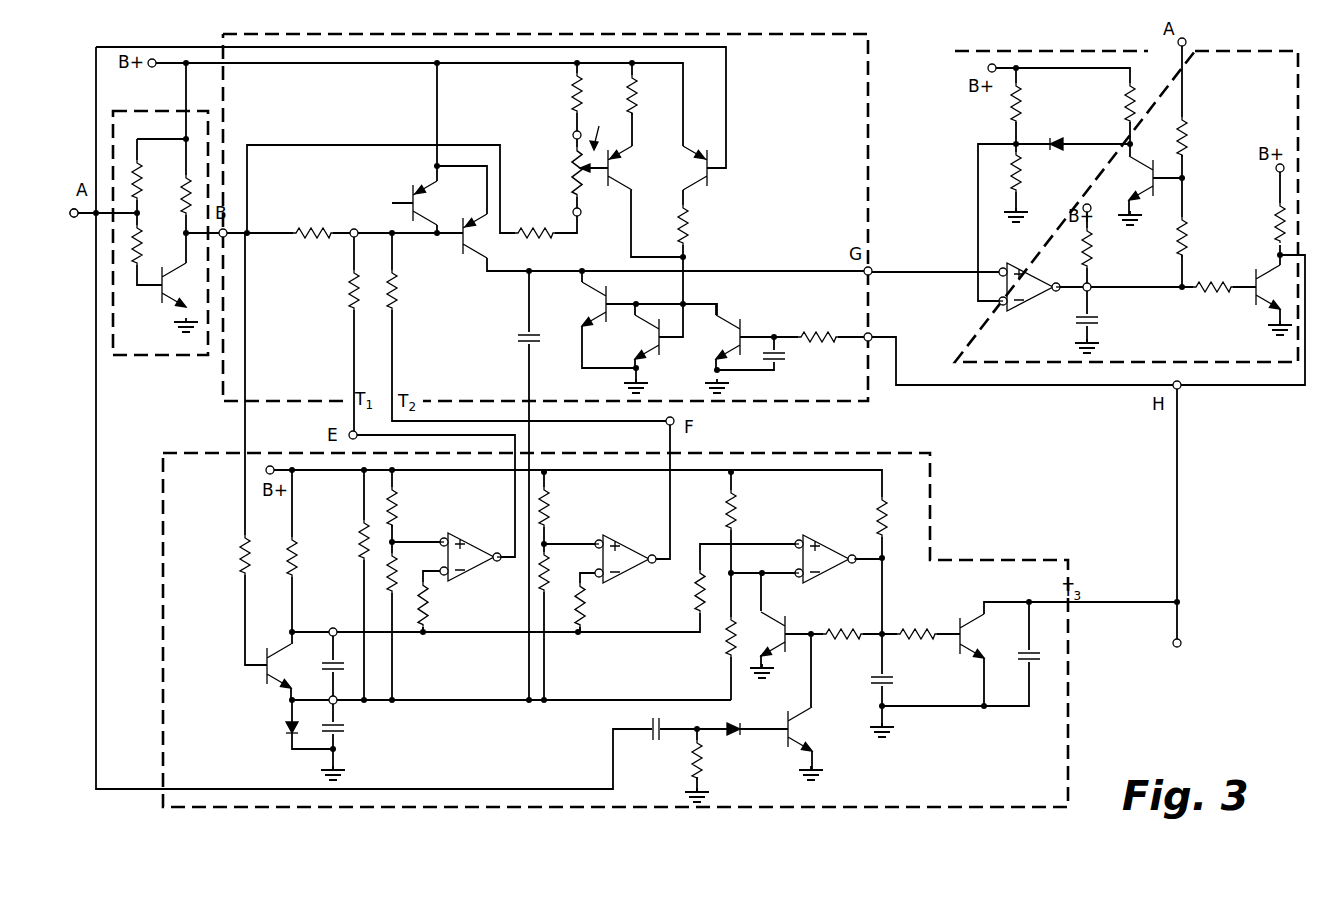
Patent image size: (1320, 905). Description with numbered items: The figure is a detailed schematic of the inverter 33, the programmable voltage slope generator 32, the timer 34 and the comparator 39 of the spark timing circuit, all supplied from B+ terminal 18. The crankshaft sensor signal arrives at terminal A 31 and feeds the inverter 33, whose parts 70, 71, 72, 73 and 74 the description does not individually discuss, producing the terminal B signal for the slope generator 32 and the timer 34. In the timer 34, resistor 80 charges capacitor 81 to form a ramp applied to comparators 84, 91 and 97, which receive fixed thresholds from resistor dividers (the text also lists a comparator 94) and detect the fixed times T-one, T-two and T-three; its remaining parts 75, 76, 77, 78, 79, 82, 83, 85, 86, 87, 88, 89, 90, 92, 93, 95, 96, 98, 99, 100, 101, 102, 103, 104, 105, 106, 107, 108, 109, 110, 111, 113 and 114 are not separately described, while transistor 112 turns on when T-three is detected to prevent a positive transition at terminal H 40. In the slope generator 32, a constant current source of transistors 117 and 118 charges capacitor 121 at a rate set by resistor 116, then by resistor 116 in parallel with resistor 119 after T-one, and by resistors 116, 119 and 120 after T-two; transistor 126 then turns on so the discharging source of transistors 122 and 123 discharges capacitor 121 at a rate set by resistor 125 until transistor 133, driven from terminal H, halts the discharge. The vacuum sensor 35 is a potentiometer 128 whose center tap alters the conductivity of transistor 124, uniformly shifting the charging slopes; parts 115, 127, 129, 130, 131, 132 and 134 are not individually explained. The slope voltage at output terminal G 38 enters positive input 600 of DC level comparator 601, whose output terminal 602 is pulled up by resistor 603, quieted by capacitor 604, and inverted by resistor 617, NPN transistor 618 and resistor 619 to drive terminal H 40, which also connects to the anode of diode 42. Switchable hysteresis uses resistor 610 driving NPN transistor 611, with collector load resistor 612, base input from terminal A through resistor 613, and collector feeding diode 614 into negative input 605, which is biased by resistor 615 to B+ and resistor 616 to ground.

The B+ terminal 18 is at (153, 67).
The terminal A 31 is at (82, 198).
The programmable voltage slope generator 32 is at (868, 130).
The inverter circuit stage 33 is at (160, 355).
The timer circuit 34 is at (163, 575).
The vacuum sensor 35 is at (601, 129).
The output terminal G 38 is at (872, 268).
The comparator 39 is at (955, 165).
The output terminal H 40 is at (1180, 389).
The diode 42 is at (1169, 677).
The transistor 70 is at (167, 283).
The resistor 71 is at (143, 244).
The resistor 72 is at (183, 188).
The resistor 73 is at (143, 178).
The terminal B 74 is at (227, 235).
The transistor 75 is at (275, 676).
The resistor 76 is at (242, 548).
The capacitor 77 is at (345, 730).
The diode 78 is at (285, 732).
The resistor 79 is at (361, 540).
The resistor 80 is at (293, 546).
The capacitor 81 is at (322, 667).
The terminal D 82 is at (329, 628).
The terminal 83 is at (337, 703).
The comparator 84 is at (482, 538).
The resistor 85 is at (444, 592).
The resistor lead 86 is at (428, 622).
The non-inverting input 87 is at (442, 536).
The resistor 88 is at (396, 506).
The resistor 89 is at (396, 572).
The comparator output 90 is at (496, 562).
The comparator 91 is at (636, 540).
The resistor 92 is at (600, 594).
The resistor lead 93 is at (584, 621).
The comparator 94 is at (596, 538).
The resistor / output 95 is at (548, 512).
The resistor 96 is at (548, 572).
The comparator 97 is at (838, 540).
The non-inverting input 98 is at (797, 538).
The inverting input 99 is at (797, 578).
The comparator output 100 is at (852, 564).
The resistor 101 is at (694, 604).
The resistor 102 is at (736, 508).
The resistor 103 is at (728, 658).
The resistor 104 is at (878, 510).
The transistor 105 is at (792, 628).
The resistor 106 is at (843, 640).
The transistor 107 is at (804, 734).
The diode 108 is at (735, 740).
The resistor 109 is at (692, 762).
The capacitor 110 is at (654, 740).
The capacitor 111 is at (893, 680).
The transistor 112 is at (974, 637).
The resistor 113 is at (920, 628).
The capacitor 114 is at (1024, 664).
The terminal 115 is at (354, 229).
The resistor 116 is at (300, 232).
The transistor 117 is at (424, 200).
The transistor 118 is at (470, 250).
The resistor 119 is at (350, 294).
The resistor 120 is at (398, 294).
The capacitor 121 is at (524, 334).
The transistor 122 is at (584, 298).
The transistor 123 is at (640, 337).
The transistor 124 is at (618, 170).
The resistor 125 is at (688, 236).
The transistor 126 is at (694, 170).
The resistor 127 is at (636, 112).
The potentiometer 128 is at (576, 168).
The potentiometer tap 129 is at (573, 135).
The resistor 130 is at (573, 98).
The potentiometer 131 is at (573, 205).
The resistor 132 is at (540, 233).
The transistor 133 is at (718, 336).
The resistor 134 is at (810, 332).
The positive input terminal 600 is at (1002, 270).
The DC level comparator 601 is at (1040, 284).
The output terminal 602 is at (1091, 290).
The resistor 603 is at (1092, 258).
The capacitor 604 is at (1098, 320).
The negative input terminal 605 is at (1000, 306).
The resistor 610 is at (1178, 222).
The NPN transistor 611 is at (1137, 178).
The resistor 612 is at (1126, 114).
The resistor 613 is at (1178, 136).
The diode 614 is at (1056, 152).
The resistor 615 is at (1020, 104).
The resistor 616 is at (1019, 194).
The resistor 617 is at (1224, 282).
The NPN transistor 618 is at (1250, 298).
The resistor 619 is at (1277, 216).